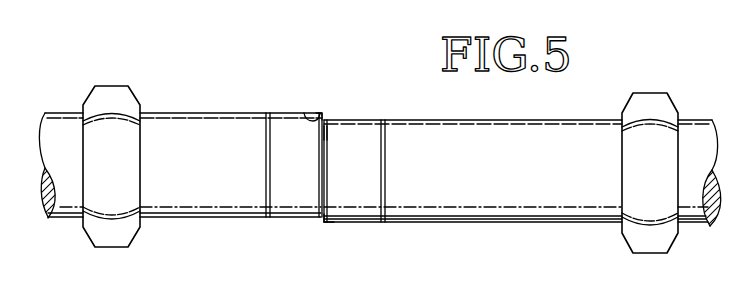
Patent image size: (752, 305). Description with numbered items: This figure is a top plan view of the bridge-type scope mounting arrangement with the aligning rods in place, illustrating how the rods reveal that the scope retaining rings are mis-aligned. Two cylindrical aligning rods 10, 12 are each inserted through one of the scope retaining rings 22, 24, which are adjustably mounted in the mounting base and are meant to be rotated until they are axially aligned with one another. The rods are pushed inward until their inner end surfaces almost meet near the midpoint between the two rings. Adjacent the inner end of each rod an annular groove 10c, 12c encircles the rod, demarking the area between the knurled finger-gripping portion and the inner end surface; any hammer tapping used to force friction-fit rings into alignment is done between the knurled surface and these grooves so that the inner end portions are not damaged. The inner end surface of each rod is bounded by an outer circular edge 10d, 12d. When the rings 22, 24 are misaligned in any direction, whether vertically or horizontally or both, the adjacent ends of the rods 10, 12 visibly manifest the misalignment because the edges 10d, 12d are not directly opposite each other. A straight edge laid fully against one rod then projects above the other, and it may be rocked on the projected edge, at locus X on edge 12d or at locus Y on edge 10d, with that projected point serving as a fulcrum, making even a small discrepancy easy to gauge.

The aligning rod 10 is at (528, 232).
The annular groove 10c is at (387, 162).
The outer circular edge 10d is at (327, 133).
The aligning rod 12 is at (227, 222).
The annular groove 12c is at (266, 139).
The outer circular edge 12d is at (316, 118).
The scope retaining ring 22 is at (125, 166).
The scope retaining ring 24 is at (662, 170).
The locus X is at (322, 113).
The locus Y is at (323, 222).